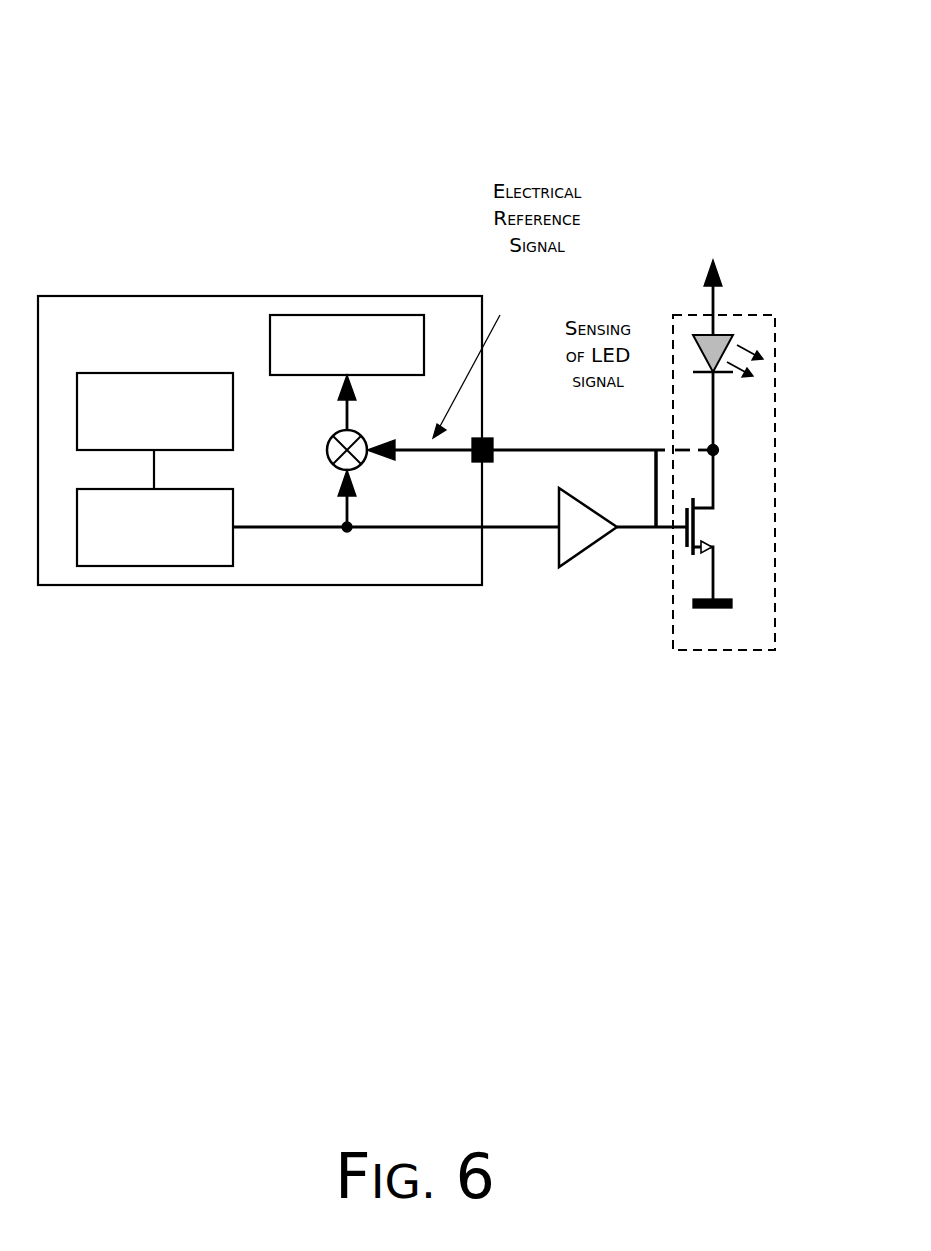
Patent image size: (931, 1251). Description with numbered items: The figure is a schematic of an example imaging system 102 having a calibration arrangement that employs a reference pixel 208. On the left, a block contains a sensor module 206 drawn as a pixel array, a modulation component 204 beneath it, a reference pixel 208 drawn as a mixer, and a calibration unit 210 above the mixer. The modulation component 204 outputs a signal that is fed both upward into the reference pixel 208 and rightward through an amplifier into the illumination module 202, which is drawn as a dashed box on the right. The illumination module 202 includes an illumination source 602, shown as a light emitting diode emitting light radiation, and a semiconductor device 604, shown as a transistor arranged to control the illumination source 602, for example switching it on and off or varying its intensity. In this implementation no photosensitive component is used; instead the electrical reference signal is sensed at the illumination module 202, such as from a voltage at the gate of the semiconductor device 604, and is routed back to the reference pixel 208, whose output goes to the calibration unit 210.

The imaging system 102 is at (630, 56).
The illumination module 202 is at (712, 455).
The modulation component 204 is at (136, 552).
The sensor module 206 is at (136, 434).
The reference pixel 208 is at (335, 467).
The calibration unit 210 is at (355, 369).
The illumination source 602 is at (720, 333).
The semiconductor device 604 is at (688, 551).